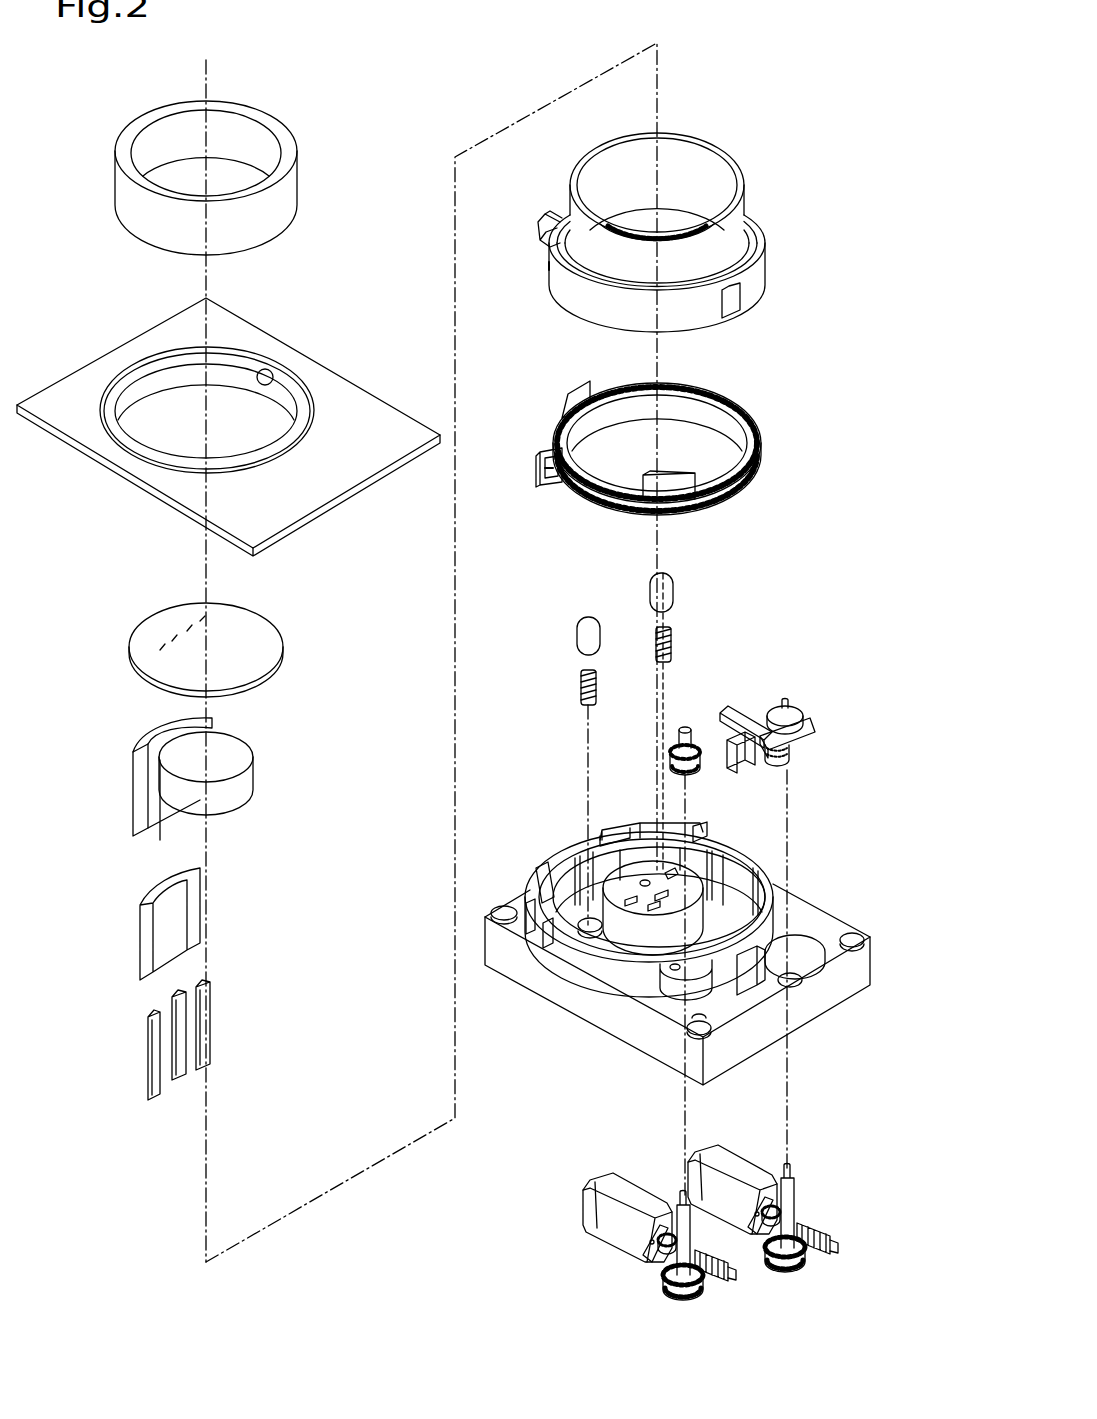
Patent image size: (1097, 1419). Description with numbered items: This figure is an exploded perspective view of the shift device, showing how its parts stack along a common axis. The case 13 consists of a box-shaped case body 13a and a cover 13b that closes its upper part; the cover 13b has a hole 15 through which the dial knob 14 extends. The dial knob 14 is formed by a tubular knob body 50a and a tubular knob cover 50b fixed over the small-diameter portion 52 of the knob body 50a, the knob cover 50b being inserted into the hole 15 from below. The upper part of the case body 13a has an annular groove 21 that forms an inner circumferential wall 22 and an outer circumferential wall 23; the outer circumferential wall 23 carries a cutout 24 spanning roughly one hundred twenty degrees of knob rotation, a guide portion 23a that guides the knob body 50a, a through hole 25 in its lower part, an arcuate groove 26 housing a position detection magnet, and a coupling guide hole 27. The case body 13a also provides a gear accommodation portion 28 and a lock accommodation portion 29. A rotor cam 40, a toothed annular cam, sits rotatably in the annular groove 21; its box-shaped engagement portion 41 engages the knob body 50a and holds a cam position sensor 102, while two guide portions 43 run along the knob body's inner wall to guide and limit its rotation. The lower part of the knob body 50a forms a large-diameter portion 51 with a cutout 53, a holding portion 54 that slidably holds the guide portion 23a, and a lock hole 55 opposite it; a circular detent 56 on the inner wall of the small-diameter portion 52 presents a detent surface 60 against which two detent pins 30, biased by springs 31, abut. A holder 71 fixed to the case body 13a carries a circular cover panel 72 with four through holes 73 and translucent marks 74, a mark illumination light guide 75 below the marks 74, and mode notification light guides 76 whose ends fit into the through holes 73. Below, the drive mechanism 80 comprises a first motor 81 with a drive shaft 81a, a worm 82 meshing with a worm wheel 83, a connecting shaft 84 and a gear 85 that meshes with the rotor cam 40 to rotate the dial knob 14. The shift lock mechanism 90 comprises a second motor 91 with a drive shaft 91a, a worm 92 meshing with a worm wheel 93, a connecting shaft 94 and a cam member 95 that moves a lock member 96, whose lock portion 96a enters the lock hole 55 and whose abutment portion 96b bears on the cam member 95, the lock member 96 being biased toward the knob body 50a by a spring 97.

The case 13 is at (454, 702).
The case body 13a is at (680, 943).
The cover 13b is at (228, 427).
The dial knob 14 is at (661, 199).
The hole 15 is at (271, 380).
The annular groove 21 is at (649, 943).
The inner circumferential wall 22 is at (742, 886).
The outer circumferential wall 23 is at (627, 943).
The guide portion 23a is at (540, 872).
The cutout 24 is at (700, 826).
The through hole 25 is at (571, 856).
The arcuate groove 26 is at (525, 882).
The coupling guide hole 27 is at (546, 942).
The gear accommodation portion 28 is at (672, 994).
The lock accommodation portion 29 is at (806, 972).
The detent pins 30 is at (575, 634).
The springs 31 is at (580, 685).
The rotor cam 40 is at (666, 443).
The engagement portion 41 is at (550, 457).
The guide portions 43 is at (578, 395).
The knob body 50a is at (661, 216).
The knob cover 50b is at (303, 175).
The large-diameter portion 51 is at (654, 274).
The small-diameter portion 52 is at (686, 167).
The cutout 53 is at (553, 288).
The holding portion 54 is at (539, 233).
The lock hole 55 is at (735, 308).
The detent 56 is at (608, 199).
The detent surface 60 is at (675, 215).
The holder 71 is at (268, 765).
The cover panel 72 is at (232, 645).
The through holes 73 is at (168, 632).
The marks 74 is at (118, 641).
The mark illumination light guide 75 is at (140, 915).
The mode notification light guides 76 is at (166, 1096).
The drive mechanism 80 is at (609, 1243).
The first motor 81 is at (627, 1212).
The drive shaft 81a is at (660, 1246).
The worm 82 is at (683, 1300).
The worm wheel 83 is at (699, 1305).
The connecting shaft 84 is at (679, 1204).
The gear 85 is at (693, 748).
The shift lock mechanism 90 is at (786, 1220).
The second motor 91 is at (732, 1206).
The drive shaft 91a is at (767, 1238).
The worm 92 is at (816, 1258).
The worm wheel 93 is at (786, 1272).
The connecting shaft 94 is at (796, 1200).
The cam member 95 is at (800, 729).
The lock member 96 is at (800, 711).
The lock portion 96a is at (738, 710).
The abutment portion 96b is at (813, 750).
The spring 97 is at (793, 768).
The cam position sensor 102 is at (553, 489).